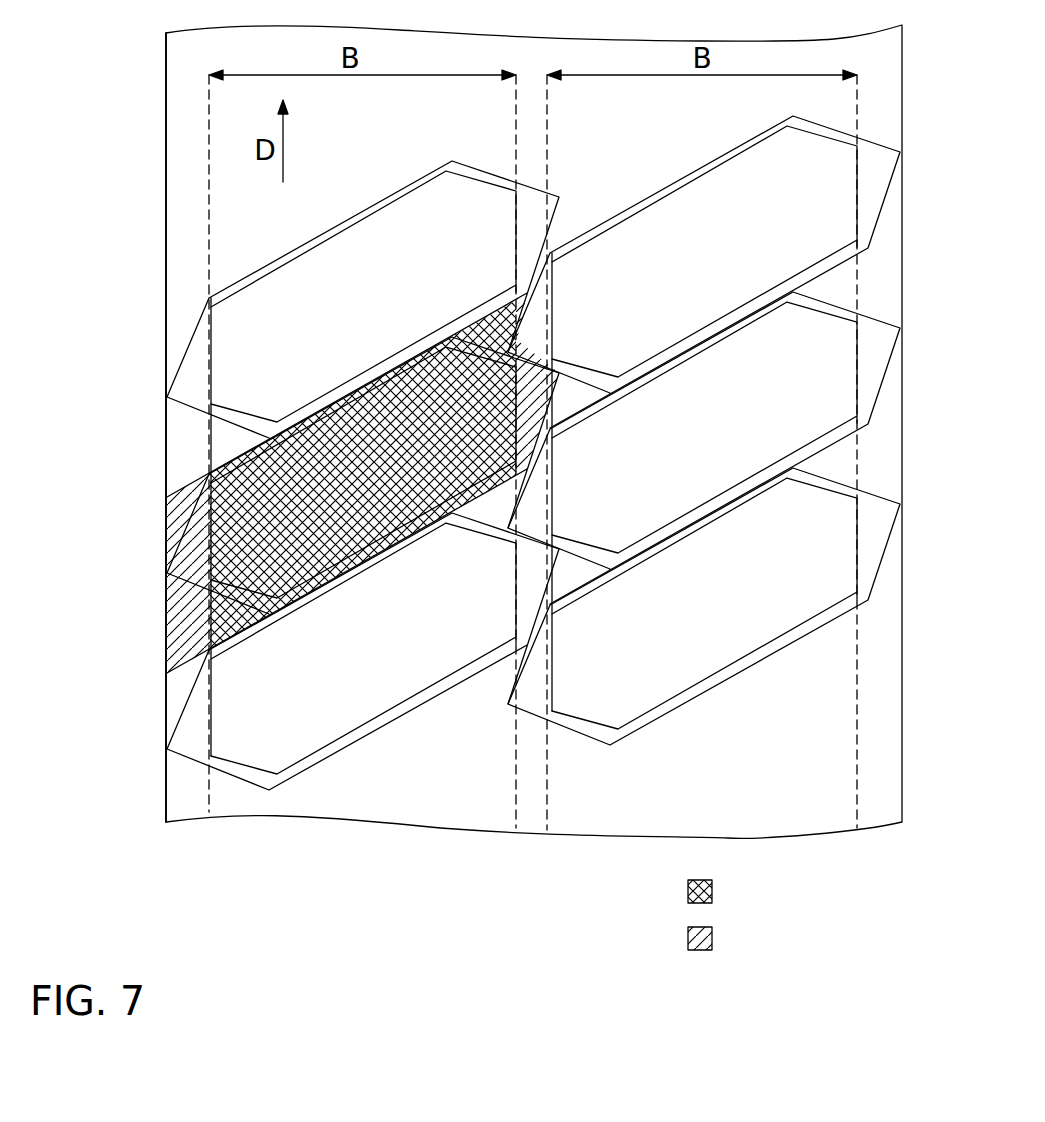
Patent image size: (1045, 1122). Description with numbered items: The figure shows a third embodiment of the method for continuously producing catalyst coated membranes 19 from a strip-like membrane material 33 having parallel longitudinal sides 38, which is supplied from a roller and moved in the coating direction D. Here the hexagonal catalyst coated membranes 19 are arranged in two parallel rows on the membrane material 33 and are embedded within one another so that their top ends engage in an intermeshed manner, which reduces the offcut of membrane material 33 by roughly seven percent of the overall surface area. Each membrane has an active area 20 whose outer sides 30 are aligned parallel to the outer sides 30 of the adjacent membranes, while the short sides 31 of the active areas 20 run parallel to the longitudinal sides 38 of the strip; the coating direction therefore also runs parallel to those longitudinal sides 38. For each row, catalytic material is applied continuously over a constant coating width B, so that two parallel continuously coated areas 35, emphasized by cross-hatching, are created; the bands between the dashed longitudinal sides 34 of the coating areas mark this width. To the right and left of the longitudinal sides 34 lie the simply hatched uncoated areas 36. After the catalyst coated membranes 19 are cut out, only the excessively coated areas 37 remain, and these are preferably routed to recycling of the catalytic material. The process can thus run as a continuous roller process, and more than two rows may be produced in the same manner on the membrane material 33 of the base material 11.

The belt 11 is at (467, 421).
The membrane material 33 is at (172, 56).
The longitudinal sides of the coating area 34 is at (193, 133).
The longitudinal sides 38 is at (151, 253).
The catalyst coated membrane 19 is at (175, 368).
The excessively coated area 37 is at (204, 609).
The outer side 30 is at (414, 204).
The active area 20 is at (533, 453).
The short side 31 is at (226, 342).
The continuously coated area 35 is at (416, 605).
The uncoated area 36 is at (416, 625).